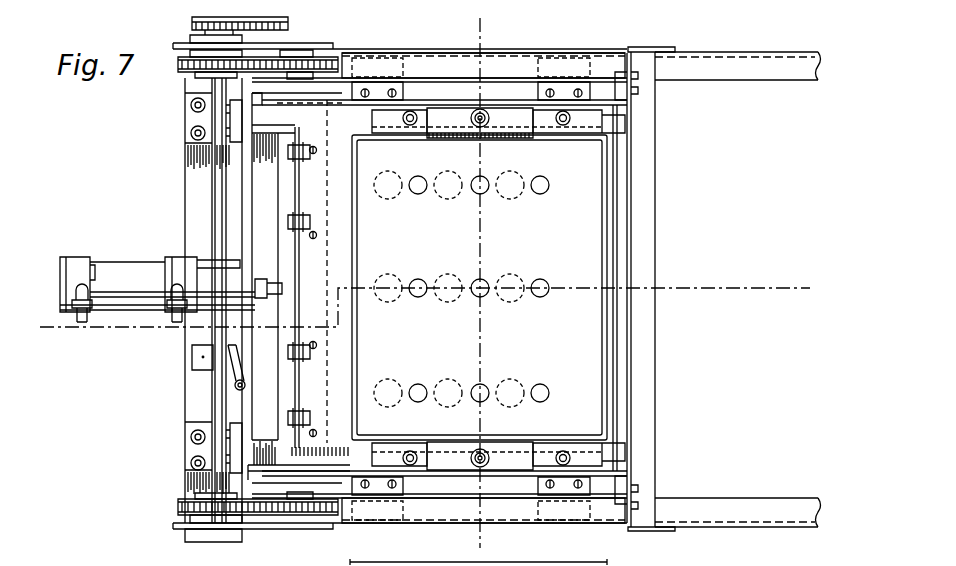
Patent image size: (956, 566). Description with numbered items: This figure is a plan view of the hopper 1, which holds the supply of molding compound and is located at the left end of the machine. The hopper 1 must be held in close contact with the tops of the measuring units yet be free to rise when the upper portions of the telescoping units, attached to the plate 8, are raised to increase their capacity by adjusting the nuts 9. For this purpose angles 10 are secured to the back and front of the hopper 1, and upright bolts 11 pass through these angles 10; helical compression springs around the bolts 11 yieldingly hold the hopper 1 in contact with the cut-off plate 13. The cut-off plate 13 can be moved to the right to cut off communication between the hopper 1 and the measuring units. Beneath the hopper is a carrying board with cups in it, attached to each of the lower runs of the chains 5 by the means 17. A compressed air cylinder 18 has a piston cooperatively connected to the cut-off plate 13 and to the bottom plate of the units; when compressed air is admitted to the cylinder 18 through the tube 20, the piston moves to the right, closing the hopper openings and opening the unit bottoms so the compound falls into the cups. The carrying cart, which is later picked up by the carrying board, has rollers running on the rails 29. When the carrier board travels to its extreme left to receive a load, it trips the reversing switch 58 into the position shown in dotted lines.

The hopper 1 is at (670, 187).
The chains 5 is at (330, 513).
The plate 8 is at (802, 294).
The nuts 9 is at (565, 453).
The angles 10 is at (452, 455).
The upright bolts 11 is at (481, 449).
The cut-off plate 13 is at (333, 378).
The means 17 is at (535, 483).
The compressed air cylinder 18 is at (146, 256).
The tube 20 is at (79, 323).
The rails 29 is at (710, 490).
The reversing switch 58 is at (200, 358).